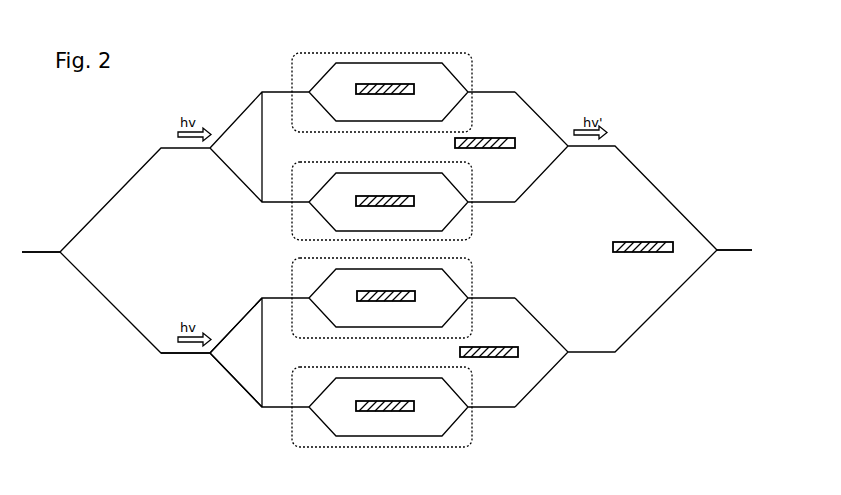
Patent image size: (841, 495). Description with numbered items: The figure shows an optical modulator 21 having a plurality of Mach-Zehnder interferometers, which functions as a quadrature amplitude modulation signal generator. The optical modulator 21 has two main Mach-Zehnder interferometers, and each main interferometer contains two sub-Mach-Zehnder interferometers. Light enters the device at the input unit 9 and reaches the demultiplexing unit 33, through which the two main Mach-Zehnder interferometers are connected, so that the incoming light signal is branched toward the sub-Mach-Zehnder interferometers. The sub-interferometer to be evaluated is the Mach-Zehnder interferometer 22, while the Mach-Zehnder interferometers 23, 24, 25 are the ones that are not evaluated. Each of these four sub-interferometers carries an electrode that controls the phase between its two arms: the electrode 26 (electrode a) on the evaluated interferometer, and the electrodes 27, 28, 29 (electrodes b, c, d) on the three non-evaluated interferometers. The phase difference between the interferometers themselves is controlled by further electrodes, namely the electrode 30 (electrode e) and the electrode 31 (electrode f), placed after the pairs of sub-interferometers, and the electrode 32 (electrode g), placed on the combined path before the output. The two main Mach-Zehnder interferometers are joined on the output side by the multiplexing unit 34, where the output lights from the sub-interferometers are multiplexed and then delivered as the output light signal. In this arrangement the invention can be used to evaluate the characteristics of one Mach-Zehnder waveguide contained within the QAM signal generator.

The optical modulator 21 is at (572, 83).
The input unit 9 is at (210, 355).
The Mach-Zehnder interferometer 22 is at (290, 430).
The Mach-Zehnder interferometer 23 is at (290, 310).
The Mach-Zehnder interferometer 24 is at (290, 225).
The Mach-Zehnder interferometer 25 is at (290, 107).
The electrode 26 is at (404, 402).
The electrode 27 is at (404, 292).
The electrode 28 is at (402, 198).
The electrode 29 is at (402, 87).
The electrode 30 is at (488, 348).
The electrode 31 is at (485, 140).
The electrode 32 is at (643, 243).
The demultiplexing unit 33 is at (60, 254).
The multiplexing unit 34 is at (717, 252).